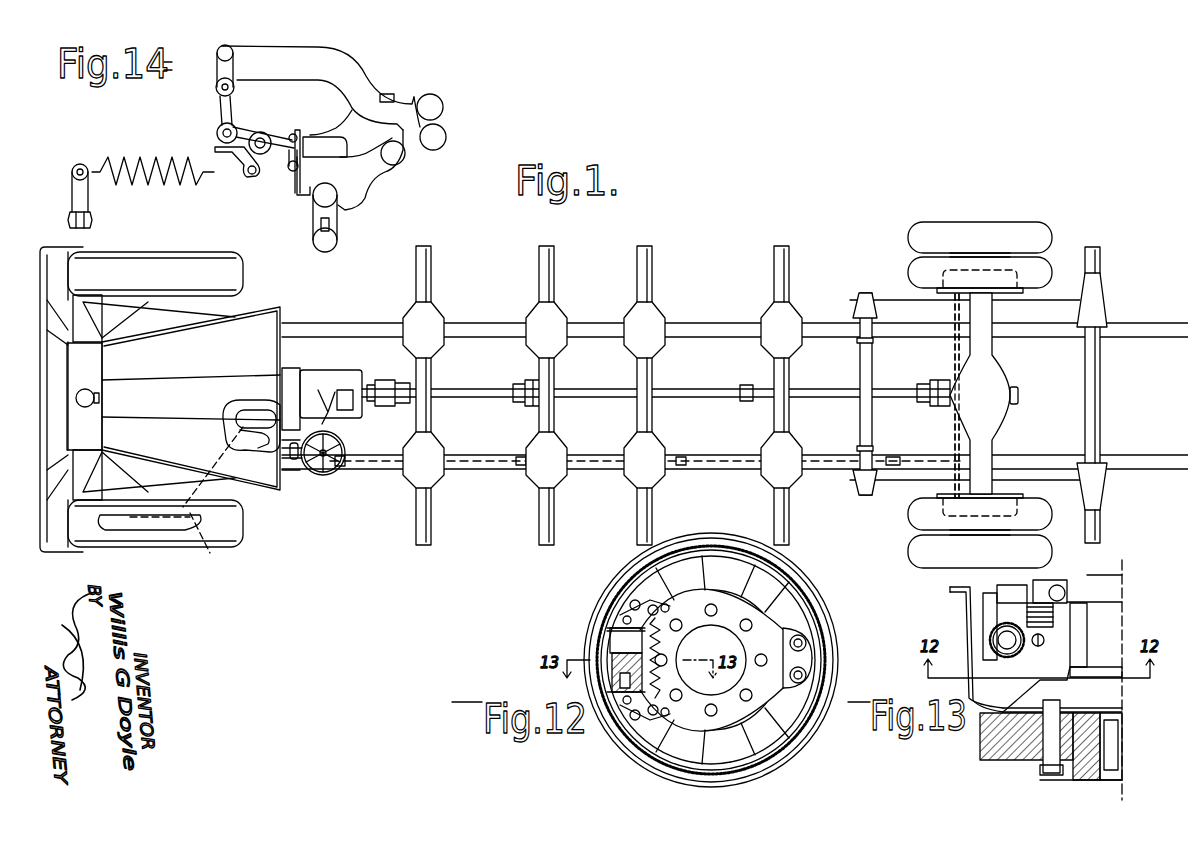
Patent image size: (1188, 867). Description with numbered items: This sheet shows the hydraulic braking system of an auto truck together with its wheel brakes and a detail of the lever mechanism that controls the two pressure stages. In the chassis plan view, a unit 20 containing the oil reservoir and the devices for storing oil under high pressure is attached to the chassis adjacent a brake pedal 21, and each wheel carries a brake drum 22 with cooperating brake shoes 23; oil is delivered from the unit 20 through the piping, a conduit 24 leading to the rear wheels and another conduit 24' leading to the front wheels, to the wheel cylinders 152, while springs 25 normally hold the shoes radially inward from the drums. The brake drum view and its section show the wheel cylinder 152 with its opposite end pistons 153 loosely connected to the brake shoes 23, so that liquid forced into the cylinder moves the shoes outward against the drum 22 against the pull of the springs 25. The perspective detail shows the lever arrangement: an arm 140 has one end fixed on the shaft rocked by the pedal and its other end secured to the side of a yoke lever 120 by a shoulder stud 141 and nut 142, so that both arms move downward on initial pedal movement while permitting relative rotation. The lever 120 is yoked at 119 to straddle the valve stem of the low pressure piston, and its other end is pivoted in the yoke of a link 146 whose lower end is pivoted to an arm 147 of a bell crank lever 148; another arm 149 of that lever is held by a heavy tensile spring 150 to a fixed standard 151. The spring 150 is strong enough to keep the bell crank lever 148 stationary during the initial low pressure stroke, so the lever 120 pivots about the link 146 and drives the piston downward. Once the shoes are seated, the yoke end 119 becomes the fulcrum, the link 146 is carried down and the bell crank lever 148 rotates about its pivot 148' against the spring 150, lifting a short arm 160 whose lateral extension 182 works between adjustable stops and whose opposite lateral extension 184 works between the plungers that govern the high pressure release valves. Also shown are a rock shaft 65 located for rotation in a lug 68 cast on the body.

In FIG. 1, the unit 20 is at (251, 418).
In FIG. 1, the brake pedal 21 is at (298, 470).
In FIG. 1, the brake drum 22 is at (990, 270).
In FIG. 12, the brake drum 22 is at (795, 575).
In FIG. 13, the brake drum 22 is at (966, 614).
In FIG. 12, the brake shoes 23 is at (683, 578).
In FIG. 13, the brake shoes 23 is at (1030, 660).
In FIG. 1, the conduit 24 is at (645, 396).
In FIG. 13, the conduit 24 is at (1077, 584).
In FIG. 1, the conduit 24' is at (203, 490).
In FIG. 12, the springs 25 is at (660, 639).
In FIG. 13, the springs 25 is at (1030, 650).
In FIG. 14, the rock shaft 65 is at (337, 230).
In FIG. 14, the lug 68 is at (360, 165).
In FIG. 14, the yoke 119 is at (440, 132).
In FIG. 14, the yoke lever 120 is at (330, 60).
In FIG. 14, the arm 140 is at (368, 174).
In FIG. 14, the shoulder stud 141 is at (406, 157).
In FIG. 14, the nut 142 is at (387, 94).
In FIG. 14, the link 146 is at (218, 108).
In FIG. 14, the arm 147 is at (250, 133).
In FIG. 14, the bell crank lever 148 is at (271, 113).
In FIG. 14, the pivot 148' is at (311, 119).
In FIG. 14, the arm 149 is at (245, 160).
In FIG. 14, the tensile spring 150 is at (134, 163).
In FIG. 14, the fixed standard 151 is at (88, 198).
In FIG. 12, the wheel cylinders 152 is at (612, 640).
In FIG. 13, the wheel cylinders 152 is at (1000, 640).
In FIG. 12, the pistons 153 is at (612, 682).
In FIG. 13, the pistons 153 is at (990, 653).
In FIG. 14, the short arm 160 is at (300, 140).
In FIG. 14, the lateral extension 182 is at (325, 150).
In FIG. 14, the lateral extension 184 is at (290, 170).